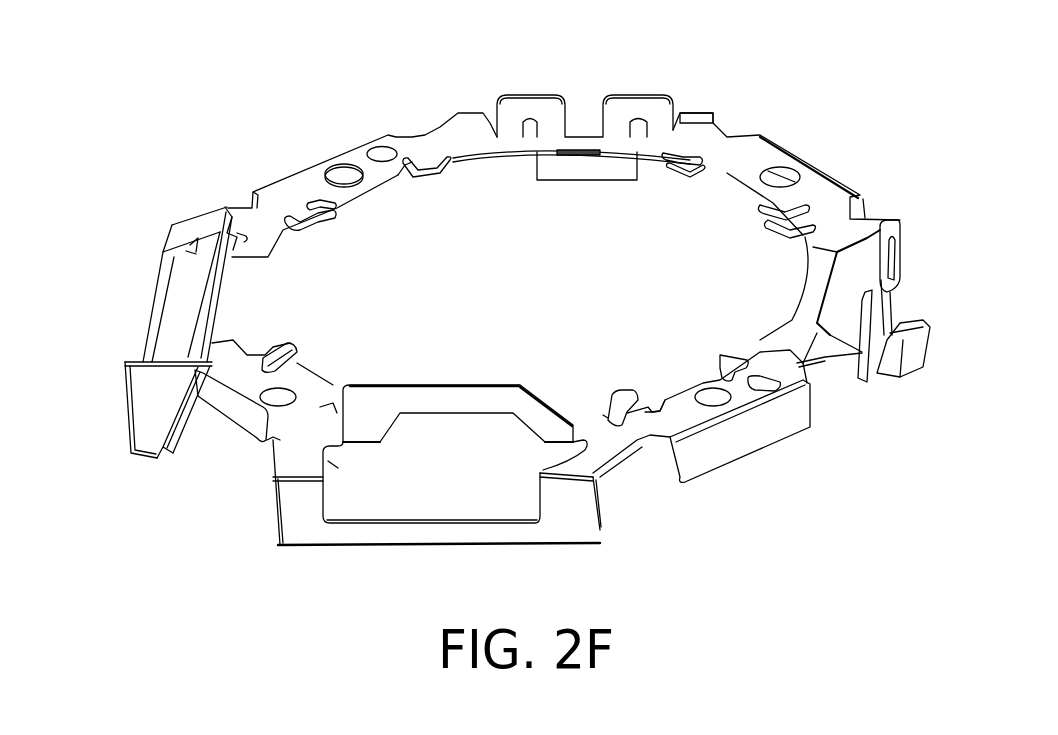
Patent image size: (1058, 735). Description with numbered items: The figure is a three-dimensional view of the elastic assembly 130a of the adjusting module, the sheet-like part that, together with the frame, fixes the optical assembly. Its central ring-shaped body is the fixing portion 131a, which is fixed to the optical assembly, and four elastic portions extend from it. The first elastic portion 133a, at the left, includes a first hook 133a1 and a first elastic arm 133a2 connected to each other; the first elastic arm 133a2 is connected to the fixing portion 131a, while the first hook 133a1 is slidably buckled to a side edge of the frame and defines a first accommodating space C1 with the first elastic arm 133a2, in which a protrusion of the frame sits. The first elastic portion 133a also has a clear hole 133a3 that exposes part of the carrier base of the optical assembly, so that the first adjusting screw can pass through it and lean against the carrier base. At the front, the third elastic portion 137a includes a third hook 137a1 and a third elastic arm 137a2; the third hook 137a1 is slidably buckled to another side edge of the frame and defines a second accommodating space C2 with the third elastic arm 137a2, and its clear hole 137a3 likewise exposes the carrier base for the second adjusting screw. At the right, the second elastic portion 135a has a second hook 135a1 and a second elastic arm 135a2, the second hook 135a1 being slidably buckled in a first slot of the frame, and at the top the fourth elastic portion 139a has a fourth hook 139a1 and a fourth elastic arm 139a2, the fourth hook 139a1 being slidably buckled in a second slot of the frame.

The elastic assembly 130a is at (897, 574).
The fixing portion 131a is at (820, 193).
The fourth elastic portion 139a is at (762, 47).
The fourth hook 139a1 is at (715, 121).
The fourth elastic arm 139a2 is at (641, 111).
The first elastic portion 133a is at (240, 520).
The first hook 133a1 is at (175, 430).
The first elastic arm 133a2 is at (162, 378).
The clear hole 133a3 is at (229, 250).
The second elastic portion 135a is at (940, 466).
The second hook 135a1 is at (895, 365).
The second elastic arm 135a2 is at (862, 300).
The third elastic portion 137a is at (748, 565).
The third hook 137a1 is at (602, 526).
The third elastic arm 137a2 is at (612, 452).
The clear hole 137a3 is at (398, 428).
The first accommodating space C1 is at (192, 252).
The second accommodating space C2 is at (334, 467).